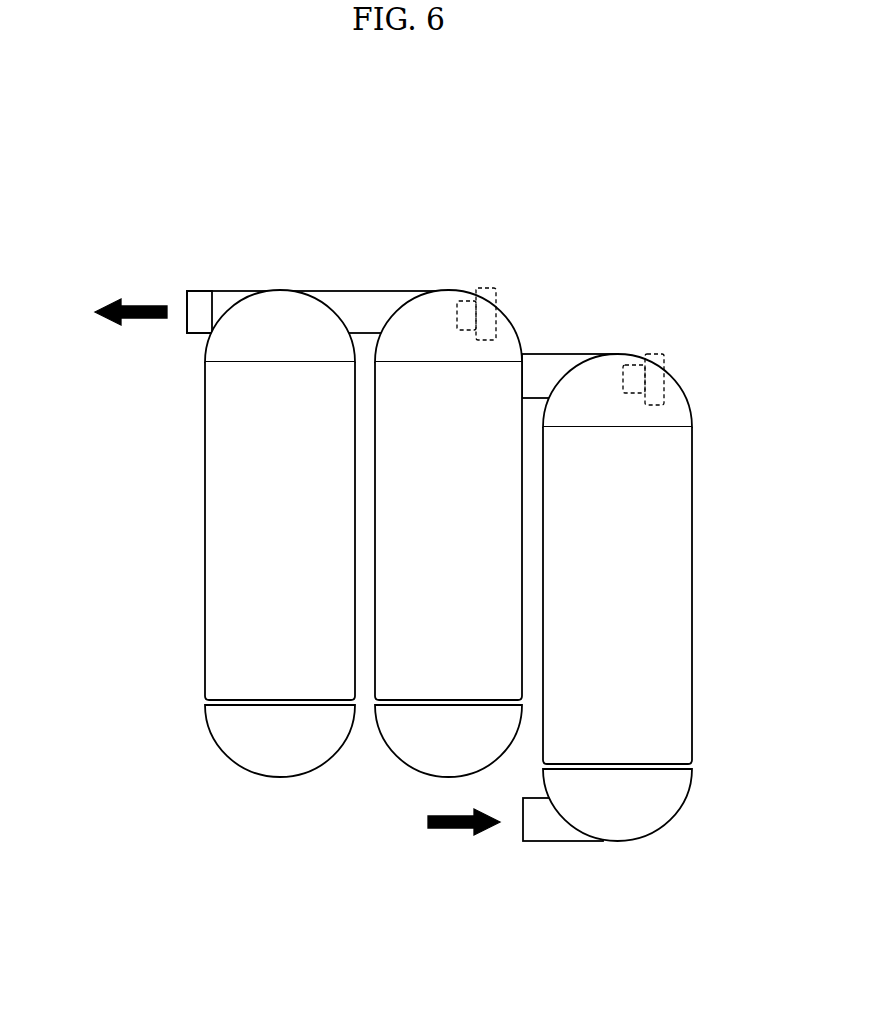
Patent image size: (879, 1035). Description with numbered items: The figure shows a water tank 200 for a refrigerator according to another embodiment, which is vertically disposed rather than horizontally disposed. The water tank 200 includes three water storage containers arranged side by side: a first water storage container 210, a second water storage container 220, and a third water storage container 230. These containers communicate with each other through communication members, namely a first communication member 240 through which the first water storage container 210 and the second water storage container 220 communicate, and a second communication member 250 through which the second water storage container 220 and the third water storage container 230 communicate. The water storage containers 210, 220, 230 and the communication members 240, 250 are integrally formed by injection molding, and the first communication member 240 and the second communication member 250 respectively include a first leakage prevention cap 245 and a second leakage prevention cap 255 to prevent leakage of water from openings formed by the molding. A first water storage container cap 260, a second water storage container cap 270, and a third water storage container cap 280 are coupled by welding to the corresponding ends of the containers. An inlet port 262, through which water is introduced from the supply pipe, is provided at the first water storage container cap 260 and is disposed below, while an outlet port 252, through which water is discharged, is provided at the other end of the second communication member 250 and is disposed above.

The water tank 200 is at (437, 214).
The first water storage container 210 is at (679, 576).
The second water storage container 220 is at (392, 457).
The third water storage container 230 is at (217, 570).
The first communication member 240 is at (561, 357).
The first leakage prevention cap 245 is at (668, 355).
The second communication member 250 is at (360, 298).
The outlet port 252 is at (188, 299).
The second leakage prevention cap 255 is at (497, 290).
The first water storage container cap 260 is at (655, 822).
The inlet port 262 is at (522, 838).
The second water storage container cap 270 is at (392, 748).
The third water storage container cap 280 is at (222, 748).